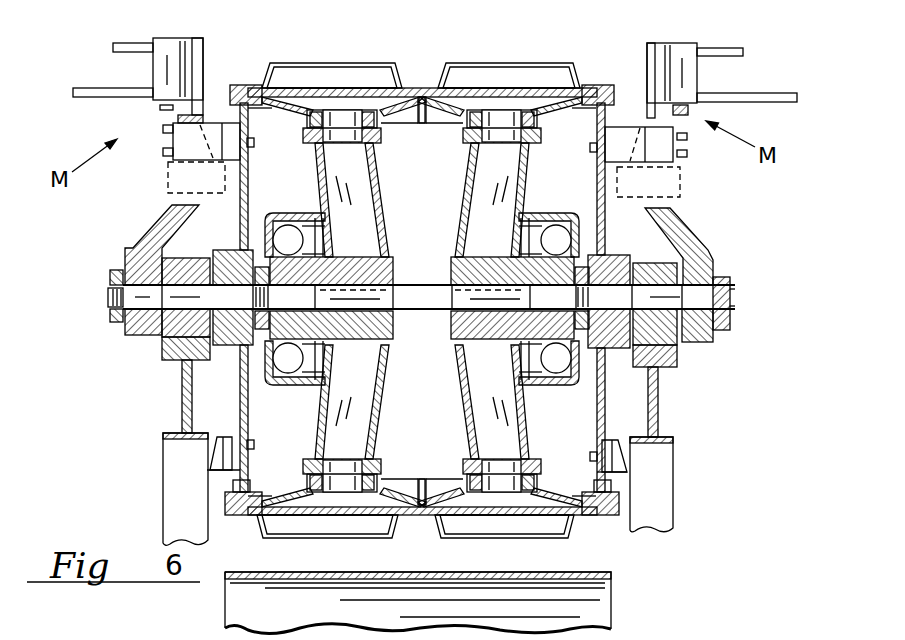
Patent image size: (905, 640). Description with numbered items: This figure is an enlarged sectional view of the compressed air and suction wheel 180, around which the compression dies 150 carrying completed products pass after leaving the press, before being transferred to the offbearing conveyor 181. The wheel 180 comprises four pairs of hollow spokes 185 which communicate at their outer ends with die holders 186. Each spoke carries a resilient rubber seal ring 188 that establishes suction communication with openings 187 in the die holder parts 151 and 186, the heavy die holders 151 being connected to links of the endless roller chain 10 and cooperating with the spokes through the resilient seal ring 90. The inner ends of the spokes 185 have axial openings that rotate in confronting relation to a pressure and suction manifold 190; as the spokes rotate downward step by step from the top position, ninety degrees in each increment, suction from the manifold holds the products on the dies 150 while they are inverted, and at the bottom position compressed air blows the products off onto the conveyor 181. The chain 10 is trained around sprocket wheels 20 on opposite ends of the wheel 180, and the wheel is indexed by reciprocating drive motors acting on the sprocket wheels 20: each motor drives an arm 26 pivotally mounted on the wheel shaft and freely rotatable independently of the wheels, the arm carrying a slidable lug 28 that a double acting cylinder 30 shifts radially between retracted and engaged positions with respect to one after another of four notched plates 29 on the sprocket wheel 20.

The endless roller chain 10 is at (253, 110).
The sprocket wheel 20 is at (248, 198).
The arm 26 is at (160, 224).
The slidable lug 28 is at (207, 123).
The notched plate 29 is at (218, 438).
The double acting cylinder 30 is at (168, 40).
The seal ring 90 is at (317, 138).
The compression die 150 is at (477, 66).
The die holder 151 is at (373, 90).
The compressed air and suction wheel 180 is at (127, 397).
The offbearing conveyor 181 is at (612, 578).
The hollow spoke 185 is at (460, 185).
The die holder 186 is at (403, 120).
The opening 187 is at (510, 89).
The resilient rubber seal ring 188 is at (340, 141).
The pressure and suction manifold 190 is at (285, 386).